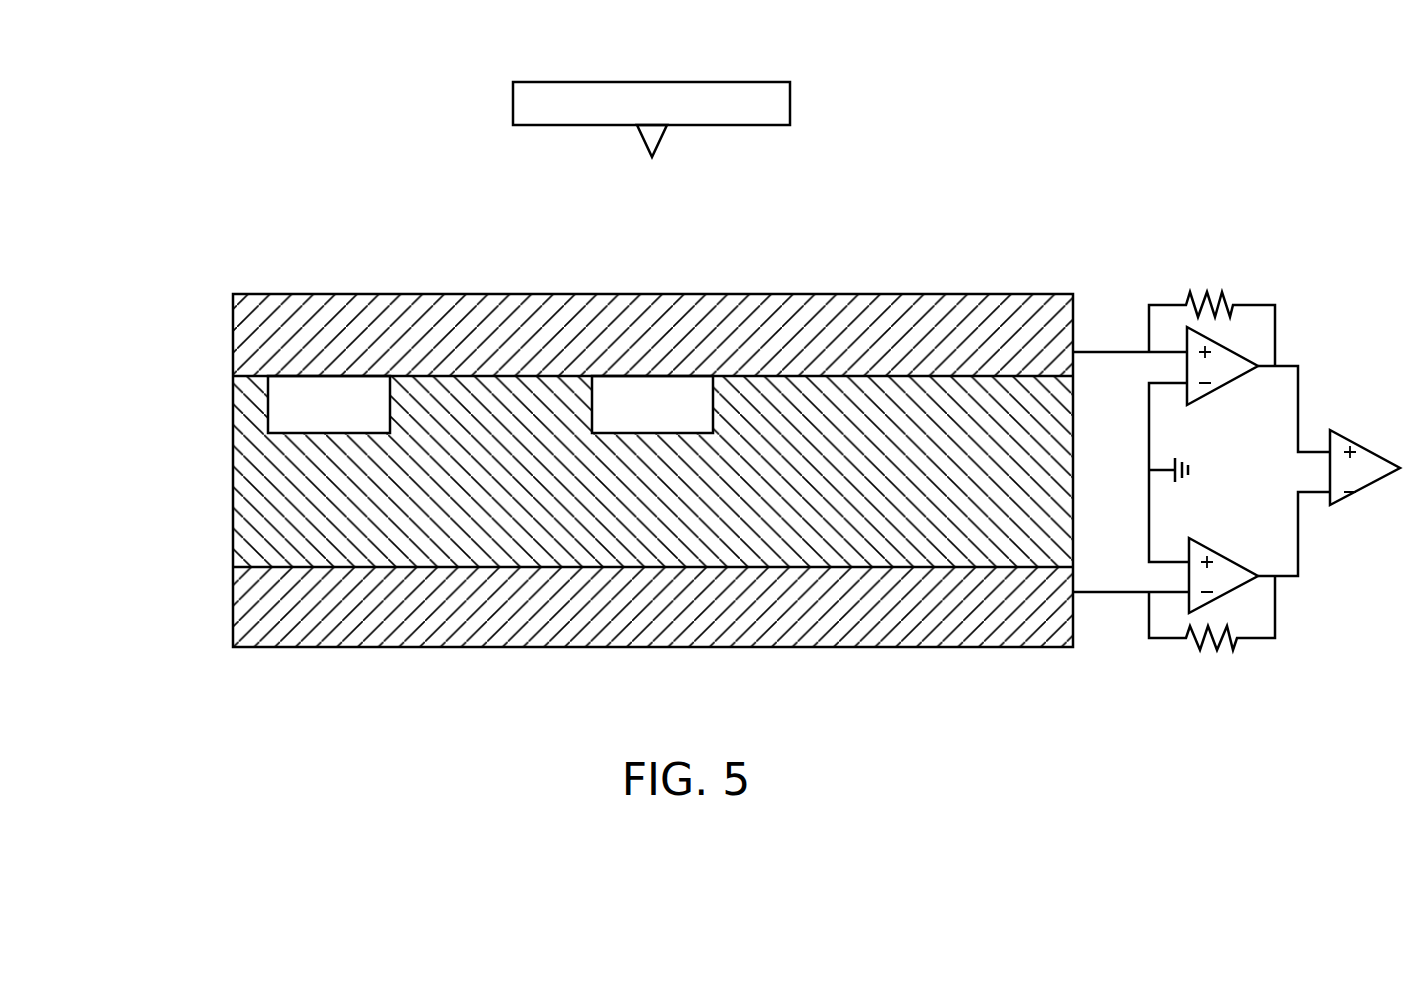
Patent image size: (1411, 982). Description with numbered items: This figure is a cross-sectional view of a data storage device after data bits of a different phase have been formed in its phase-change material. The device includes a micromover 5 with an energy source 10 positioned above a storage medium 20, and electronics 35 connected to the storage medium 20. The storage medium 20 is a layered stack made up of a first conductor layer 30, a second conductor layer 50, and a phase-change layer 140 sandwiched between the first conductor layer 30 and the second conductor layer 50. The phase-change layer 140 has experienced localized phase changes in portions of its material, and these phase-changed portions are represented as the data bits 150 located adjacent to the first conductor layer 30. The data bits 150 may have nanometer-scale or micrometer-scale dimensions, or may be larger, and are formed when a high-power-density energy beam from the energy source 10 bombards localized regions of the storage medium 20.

The micromover 5 is at (778, 105).
The energy source 10 is at (652, 140).
The storage medium 20 is at (575, 466).
The first conductor layer 30 is at (922, 317).
The phase-change layer 140 is at (262, 545).
The data bits 150 is at (330, 417).
The second conductor layer 50 is at (922, 613).
The electronics 35 is at (1107, 642).